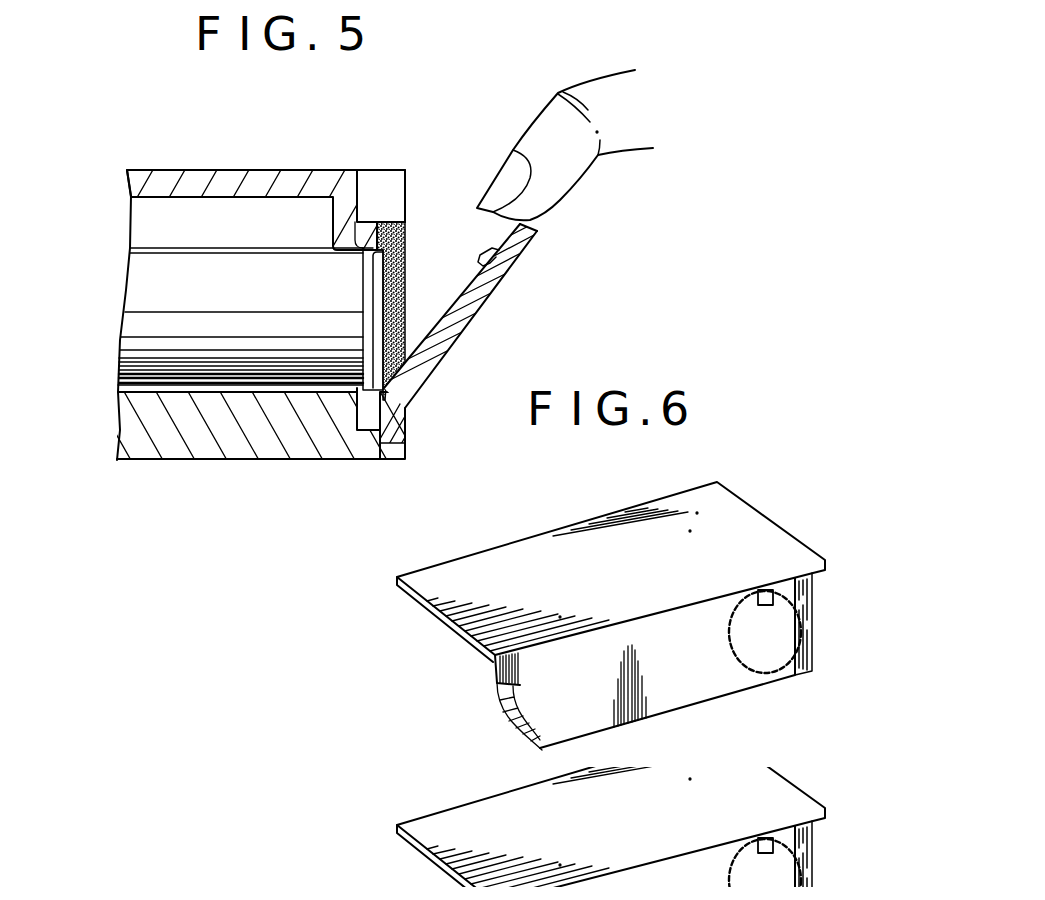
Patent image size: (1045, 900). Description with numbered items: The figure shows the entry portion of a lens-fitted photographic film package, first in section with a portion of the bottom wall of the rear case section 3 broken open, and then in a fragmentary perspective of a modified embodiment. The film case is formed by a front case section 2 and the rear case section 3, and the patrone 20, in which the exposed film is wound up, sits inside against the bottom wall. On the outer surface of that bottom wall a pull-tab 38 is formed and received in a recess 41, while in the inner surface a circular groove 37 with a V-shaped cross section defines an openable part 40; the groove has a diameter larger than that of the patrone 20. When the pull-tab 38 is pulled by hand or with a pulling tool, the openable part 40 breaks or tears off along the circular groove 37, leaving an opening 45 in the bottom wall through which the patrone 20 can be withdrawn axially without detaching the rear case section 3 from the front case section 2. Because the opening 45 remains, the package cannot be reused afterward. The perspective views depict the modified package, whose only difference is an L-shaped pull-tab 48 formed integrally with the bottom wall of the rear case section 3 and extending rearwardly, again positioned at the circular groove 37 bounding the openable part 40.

In FIG. 5, the front case section 2 is at (217, 448).
In FIG. 5, the rear case section 3 is at (240, 178).
In FIG. 6, the rear case section 3 is at (532, 550).
In FIG. 5, the patrone 20 is at (135, 289).
In FIG. 5, the circular groove 37 is at (405, 432).
In FIG. 6, the circular groove 37 is at (729, 650).
In FIG. 5, the pull-tab 38 is at (530, 223).
In FIG. 5, the openable part 40 is at (473, 310).
In FIG. 6, the openable part 40 is at (813, 623).
In FIG. 5, the recess 41 is at (379, 200).
In FIG. 5, the opening 45 is at (405, 260).
In FIG. 6, the L-shaped pull-tab 48 is at (763, 592).